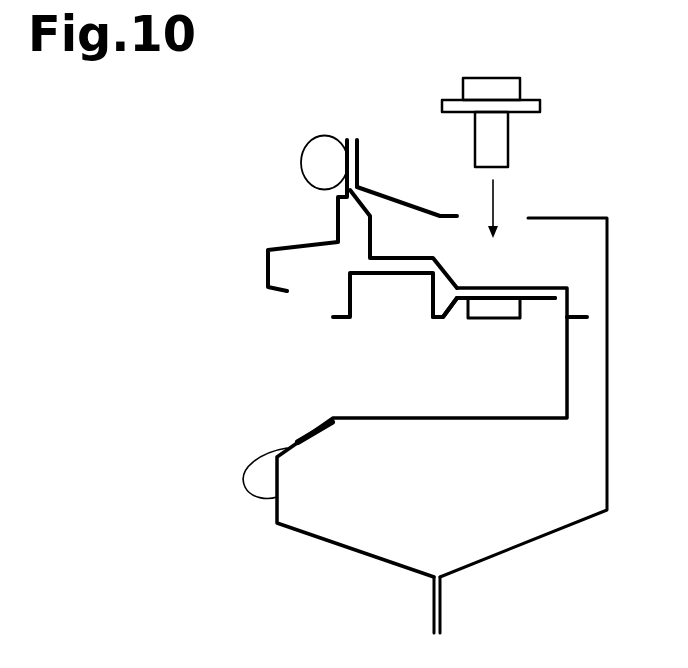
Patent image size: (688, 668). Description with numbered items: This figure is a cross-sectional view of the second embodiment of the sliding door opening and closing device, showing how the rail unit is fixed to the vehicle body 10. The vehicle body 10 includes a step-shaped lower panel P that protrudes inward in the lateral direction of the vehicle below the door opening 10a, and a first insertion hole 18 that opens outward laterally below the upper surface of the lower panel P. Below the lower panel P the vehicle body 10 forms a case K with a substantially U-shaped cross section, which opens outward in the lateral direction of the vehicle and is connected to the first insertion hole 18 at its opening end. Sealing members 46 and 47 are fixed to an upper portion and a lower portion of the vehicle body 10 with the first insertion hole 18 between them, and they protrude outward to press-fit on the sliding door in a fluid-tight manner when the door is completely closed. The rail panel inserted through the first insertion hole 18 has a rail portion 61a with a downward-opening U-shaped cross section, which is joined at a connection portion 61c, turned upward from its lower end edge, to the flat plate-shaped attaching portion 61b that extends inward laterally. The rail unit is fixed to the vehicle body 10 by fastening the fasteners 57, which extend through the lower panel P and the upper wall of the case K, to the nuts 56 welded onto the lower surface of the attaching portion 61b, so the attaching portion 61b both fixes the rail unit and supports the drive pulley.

The vehicle body 10 is at (283, 243).
The door opening 10a is at (352, 140).
The first insertion hole 18 is at (295, 441).
The sealing member 46 is at (302, 148).
The sealing member 47 is at (248, 497).
The nut 56 is at (493, 319).
The fastener 57 is at (510, 137).
The rail portion 61a is at (397, 273).
The attaching portion 61b is at (547, 274).
The connection portion 61c is at (452, 308).
The case K is at (568, 362).
The lower panel P is at (436, 216).